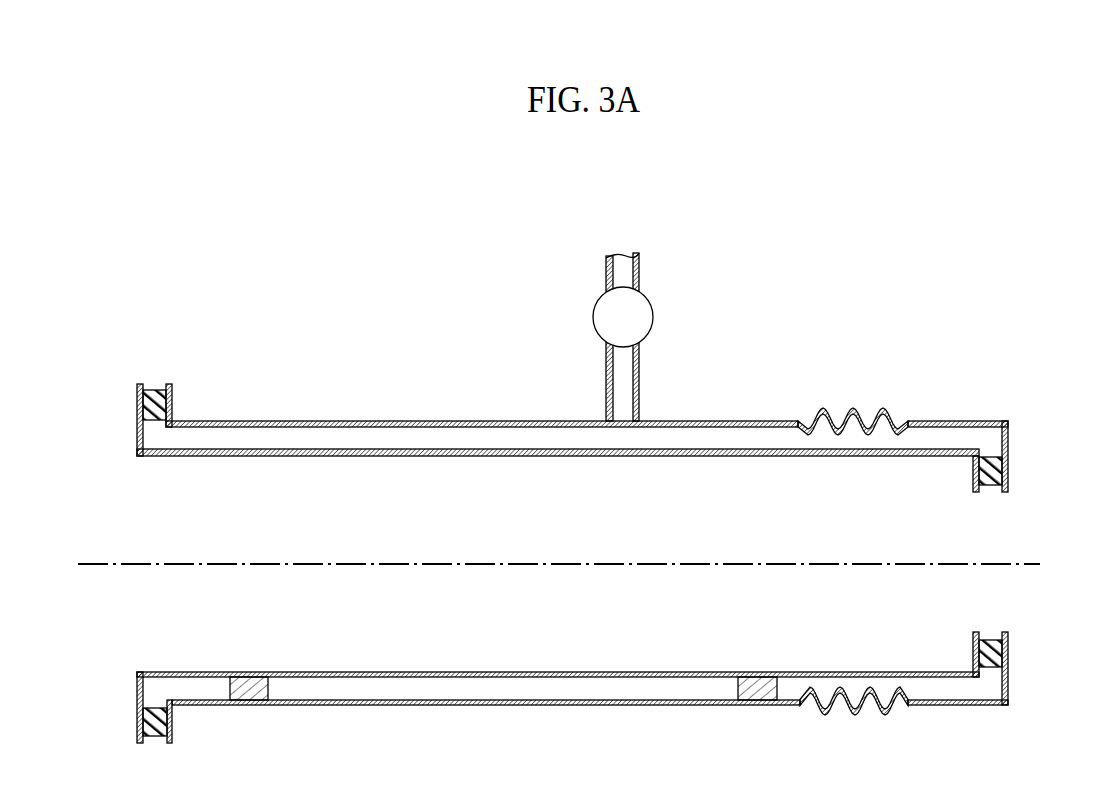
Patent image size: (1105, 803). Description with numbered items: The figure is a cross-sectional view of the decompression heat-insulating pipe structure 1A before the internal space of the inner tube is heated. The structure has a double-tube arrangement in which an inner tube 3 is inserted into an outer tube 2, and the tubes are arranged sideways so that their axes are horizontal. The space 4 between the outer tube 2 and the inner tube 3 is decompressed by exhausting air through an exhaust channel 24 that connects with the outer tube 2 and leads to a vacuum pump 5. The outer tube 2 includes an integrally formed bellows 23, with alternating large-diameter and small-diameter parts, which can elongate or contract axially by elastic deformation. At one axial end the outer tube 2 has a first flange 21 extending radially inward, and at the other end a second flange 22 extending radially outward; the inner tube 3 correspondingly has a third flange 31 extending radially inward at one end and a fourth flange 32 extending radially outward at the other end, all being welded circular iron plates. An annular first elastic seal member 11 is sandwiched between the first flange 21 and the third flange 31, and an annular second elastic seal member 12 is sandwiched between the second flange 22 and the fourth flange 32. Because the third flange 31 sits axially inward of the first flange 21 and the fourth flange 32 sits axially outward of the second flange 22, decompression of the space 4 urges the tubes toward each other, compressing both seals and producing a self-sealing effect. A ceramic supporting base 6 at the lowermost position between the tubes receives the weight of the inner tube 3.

The decompression heat-insulating pipe structure 1A is at (878, 243).
The outer tube 2 is at (420, 421).
The inner tube 3 is at (470, 449).
The space 4 is at (518, 440).
The vacuum pump 5 is at (639, 320).
The supporting base 6 is at (247, 690).
The first elastic seal member 11 is at (990, 490).
The second elastic seal member 12 is at (155, 390).
The first flange 21 is at (1008, 468).
The second flange 22 is at (173, 401).
The bellows 23 is at (851, 408).
The exhaust channel 24 is at (641, 375).
The third flange 31 is at (975, 471).
The fourth flange 32 is at (137, 397).